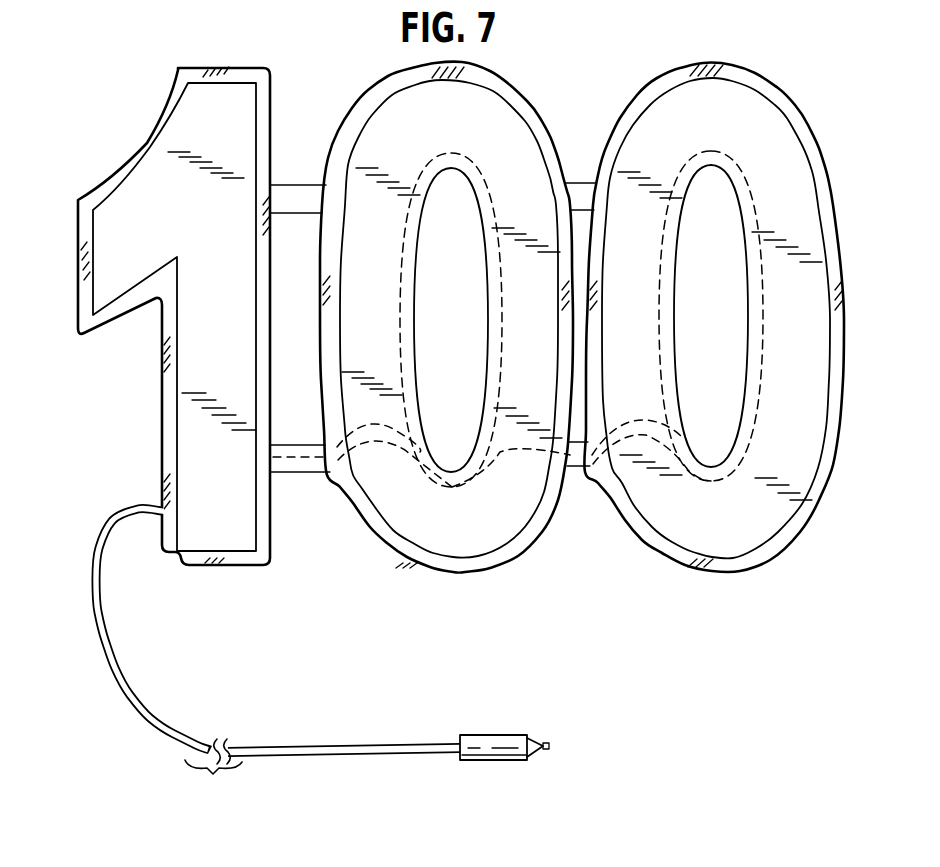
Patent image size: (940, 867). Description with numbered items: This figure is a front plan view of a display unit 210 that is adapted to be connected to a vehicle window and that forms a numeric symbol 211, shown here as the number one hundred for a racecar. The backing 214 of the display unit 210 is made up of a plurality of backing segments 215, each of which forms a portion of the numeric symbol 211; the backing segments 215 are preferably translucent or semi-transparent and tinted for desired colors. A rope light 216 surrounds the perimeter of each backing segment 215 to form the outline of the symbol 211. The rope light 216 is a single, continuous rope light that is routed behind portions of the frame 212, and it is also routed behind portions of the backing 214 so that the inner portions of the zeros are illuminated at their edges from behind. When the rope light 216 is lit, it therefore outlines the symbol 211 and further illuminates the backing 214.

The display unit 210 is at (816, 101).
The numeric symbol 211 is at (572, 522).
The frame 212 is at (297, 197).
The backing 214 is at (637, 148).
The backing segments 215 is at (237, 338).
The rope light 216 is at (838, 391).